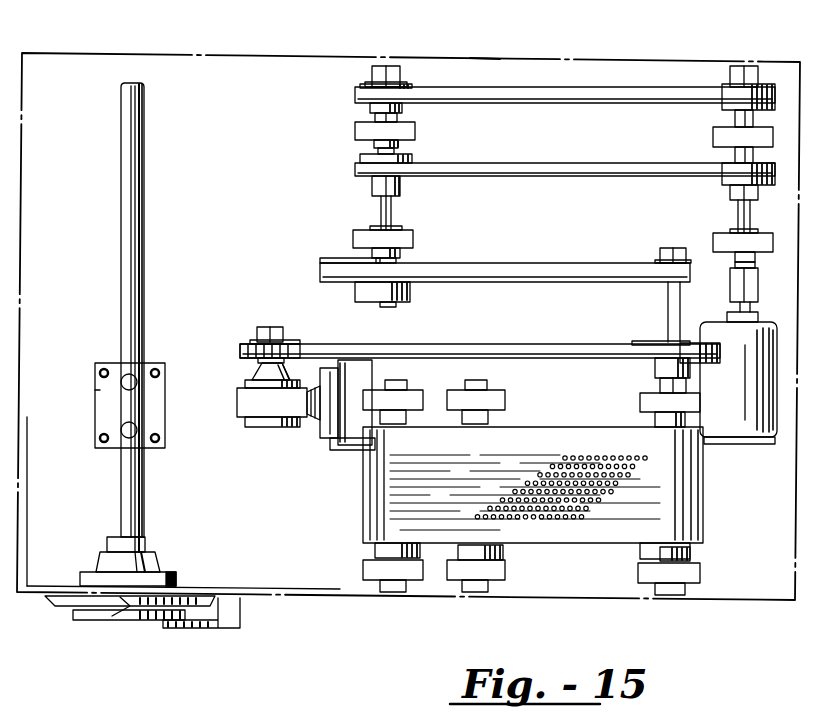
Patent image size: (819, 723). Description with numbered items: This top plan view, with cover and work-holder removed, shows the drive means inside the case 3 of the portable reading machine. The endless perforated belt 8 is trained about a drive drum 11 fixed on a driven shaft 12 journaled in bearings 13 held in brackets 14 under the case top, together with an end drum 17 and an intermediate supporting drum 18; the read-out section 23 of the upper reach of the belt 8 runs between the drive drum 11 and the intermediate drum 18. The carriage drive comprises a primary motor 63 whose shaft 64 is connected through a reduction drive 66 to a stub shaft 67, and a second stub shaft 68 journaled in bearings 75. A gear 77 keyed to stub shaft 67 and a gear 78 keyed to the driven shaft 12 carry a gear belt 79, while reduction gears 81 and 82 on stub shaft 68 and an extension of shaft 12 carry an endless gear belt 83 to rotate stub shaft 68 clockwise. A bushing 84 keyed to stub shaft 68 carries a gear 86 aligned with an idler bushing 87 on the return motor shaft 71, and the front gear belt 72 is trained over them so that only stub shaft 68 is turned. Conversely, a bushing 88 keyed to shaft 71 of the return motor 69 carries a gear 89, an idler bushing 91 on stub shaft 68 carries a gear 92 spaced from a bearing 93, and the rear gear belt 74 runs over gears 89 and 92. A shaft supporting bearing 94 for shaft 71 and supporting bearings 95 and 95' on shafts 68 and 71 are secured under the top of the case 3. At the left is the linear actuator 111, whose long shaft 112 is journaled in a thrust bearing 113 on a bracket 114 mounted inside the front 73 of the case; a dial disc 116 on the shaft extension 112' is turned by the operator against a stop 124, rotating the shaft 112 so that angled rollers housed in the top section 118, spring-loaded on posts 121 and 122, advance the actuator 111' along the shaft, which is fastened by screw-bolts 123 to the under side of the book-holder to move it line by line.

The case 3 is at (522, 58).
The endless perforated belt 8 is at (540, 427).
The drive drum 11 is at (642, 425).
The driven shaft 12 is at (692, 562).
The bearings 13 is at (652, 560).
The brackets 14 is at (490, 392).
The end drum 17 is at (368, 547).
The intermediate supporting drum 18 is at (448, 552).
The read-out section 23 is at (577, 512).
The primary motor 63 is at (348, 444).
The shaft 64 is at (312, 420).
The reduction drive 66 is at (246, 410).
The stub shaft 67 is at (262, 365).
The stub shaft 68 is at (393, 208).
The return motor 69 is at (730, 437).
The return motor shaft 71 is at (752, 216).
The front gear belt 72 is at (567, 176).
The front 73 is at (318, 602).
The rear gear belt 74 is at (567, 103).
The bearings 75 is at (372, 116).
The gear 77 is at (283, 340).
The gear 78 is at (648, 343).
The gear belt 79 is at (503, 346).
The reduction gear 81 is at (345, 264).
The reduction gear 82 is at (658, 262).
The gear belt 83 is at (523, 264).
The bushing 84 is at (374, 190).
The gear 86 is at (364, 156).
The idler bushing 87 is at (722, 190).
The bushing 88 is at (750, 83).
The gear 89 is at (722, 88).
The idler bushing 91 is at (401, 82).
The gear 92 is at (362, 86).
The bearing 93 is at (402, 144).
The shaft supporting bearing 94 is at (722, 128).
The supporting bearing 95 is at (362, 232).
The supporting bearing 95' is at (728, 231).
The linear actuator 111 is at (156, 310).
The actuator 111' is at (74, 383).
The shaft 112 is at (106, 310).
The extension 112' is at (129, 621).
The thrust bearing 113 is at (148, 544).
The bracket 114 is at (82, 578).
The dial disc 116 is at (120, 605).
The top section 118 is at (138, 417).
The post 121 is at (128, 388).
The post 122 is at (134, 426).
The screw-bolts 123 is at (104, 368).
The stop 124 is at (205, 626).